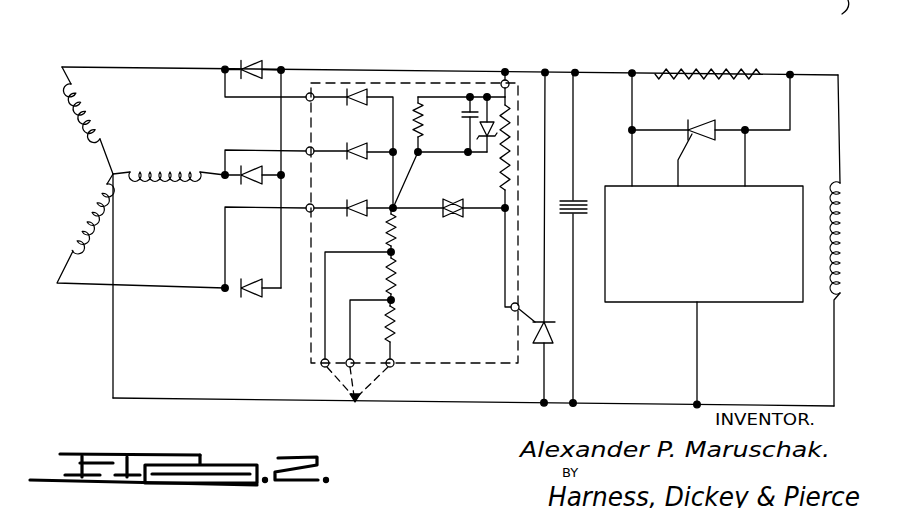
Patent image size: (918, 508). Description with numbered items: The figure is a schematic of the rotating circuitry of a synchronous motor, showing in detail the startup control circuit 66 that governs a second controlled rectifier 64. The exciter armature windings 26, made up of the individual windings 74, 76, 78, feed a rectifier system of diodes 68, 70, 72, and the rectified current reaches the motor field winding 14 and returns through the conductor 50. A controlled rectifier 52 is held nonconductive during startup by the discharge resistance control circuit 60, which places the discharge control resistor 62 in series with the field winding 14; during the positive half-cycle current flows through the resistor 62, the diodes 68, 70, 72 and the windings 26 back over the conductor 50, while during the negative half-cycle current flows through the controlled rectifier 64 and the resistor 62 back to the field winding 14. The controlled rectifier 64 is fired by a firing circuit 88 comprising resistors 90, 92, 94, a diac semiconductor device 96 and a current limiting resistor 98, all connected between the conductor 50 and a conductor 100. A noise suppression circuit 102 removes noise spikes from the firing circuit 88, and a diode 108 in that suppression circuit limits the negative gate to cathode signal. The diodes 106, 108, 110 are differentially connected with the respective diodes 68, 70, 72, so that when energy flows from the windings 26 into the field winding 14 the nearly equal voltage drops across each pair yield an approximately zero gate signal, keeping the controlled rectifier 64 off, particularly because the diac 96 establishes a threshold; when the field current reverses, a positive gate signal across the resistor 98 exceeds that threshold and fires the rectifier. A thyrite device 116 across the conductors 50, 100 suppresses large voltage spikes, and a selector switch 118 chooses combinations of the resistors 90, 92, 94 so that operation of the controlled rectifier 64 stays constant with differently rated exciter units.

The motor field winding 14 is at (832, 287).
The exciter armature windings 26 is at (120, 232).
The conductor 50 is at (412, 404).
The controlled rectifier 52 is at (700, 115).
The discharge resistance control circuit 60 is at (738, 302).
The discharge control resistor 62 is at (711, 69).
The second controlled rectifier 64 is at (556, 334).
The startup control circuit 66 is at (426, 82).
The diode 68 is at (250, 57).
The diode 70 is at (248, 165).
The diode 72 is at (255, 298).
The individual winding 74 is at (95, 111).
The individual winding 76 is at (167, 167).
The individual winding 78 is at (83, 214).
The firing circuit 88 is at (398, 287).
The resistor 90 is at (392, 336).
The resistor 92 is at (397, 223).
The resistor 94 is at (396, 268).
The diac semiconductor device 96 is at (455, 195).
The current limiting resistor 98 is at (510, 150).
The conductor 100 is at (506, 70).
The noise suppression circuit 102 is at (452, 92).
The diode 106 is at (358, 88).
The diode 108 is at (351, 148).
The diode 110 is at (345, 221).
The thyrite device 116 is at (582, 198).
The selector switch 118 is at (328, 382).